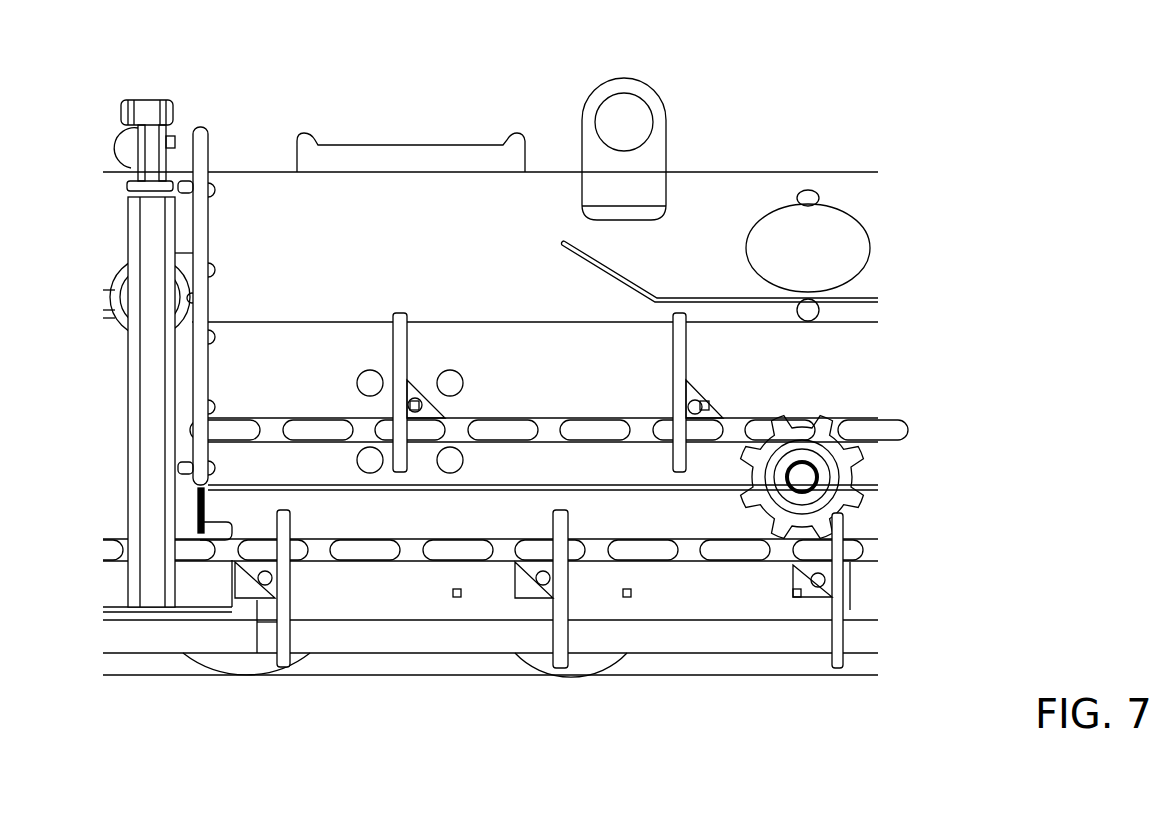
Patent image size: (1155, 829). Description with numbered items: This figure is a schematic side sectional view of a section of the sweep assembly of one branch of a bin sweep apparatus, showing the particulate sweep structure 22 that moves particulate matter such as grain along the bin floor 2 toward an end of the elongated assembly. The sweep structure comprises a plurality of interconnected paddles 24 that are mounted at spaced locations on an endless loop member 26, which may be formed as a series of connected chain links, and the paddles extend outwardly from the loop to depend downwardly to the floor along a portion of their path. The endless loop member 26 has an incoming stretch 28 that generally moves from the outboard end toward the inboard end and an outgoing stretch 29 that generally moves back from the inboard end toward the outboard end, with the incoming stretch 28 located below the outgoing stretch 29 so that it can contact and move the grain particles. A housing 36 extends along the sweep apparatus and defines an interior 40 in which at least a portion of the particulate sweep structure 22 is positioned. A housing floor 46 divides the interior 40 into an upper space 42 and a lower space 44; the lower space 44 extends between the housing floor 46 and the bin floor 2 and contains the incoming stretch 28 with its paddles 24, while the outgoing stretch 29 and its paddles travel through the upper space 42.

The bin floor 2 is at (738, 675).
The particulate sweep structure 22 is at (697, 683).
The paddles 24 is at (840, 640).
The endless loop member 26 is at (738, 553).
The incoming stretch 28 is at (367, 555).
The outgoing stretch 29 is at (498, 432).
The housing 36 is at (697, 195).
The interior 40 is at (318, 348).
The upper space 42 is at (505, 360).
The lower space 44 is at (333, 598).
The housing floor 46 is at (617, 490).